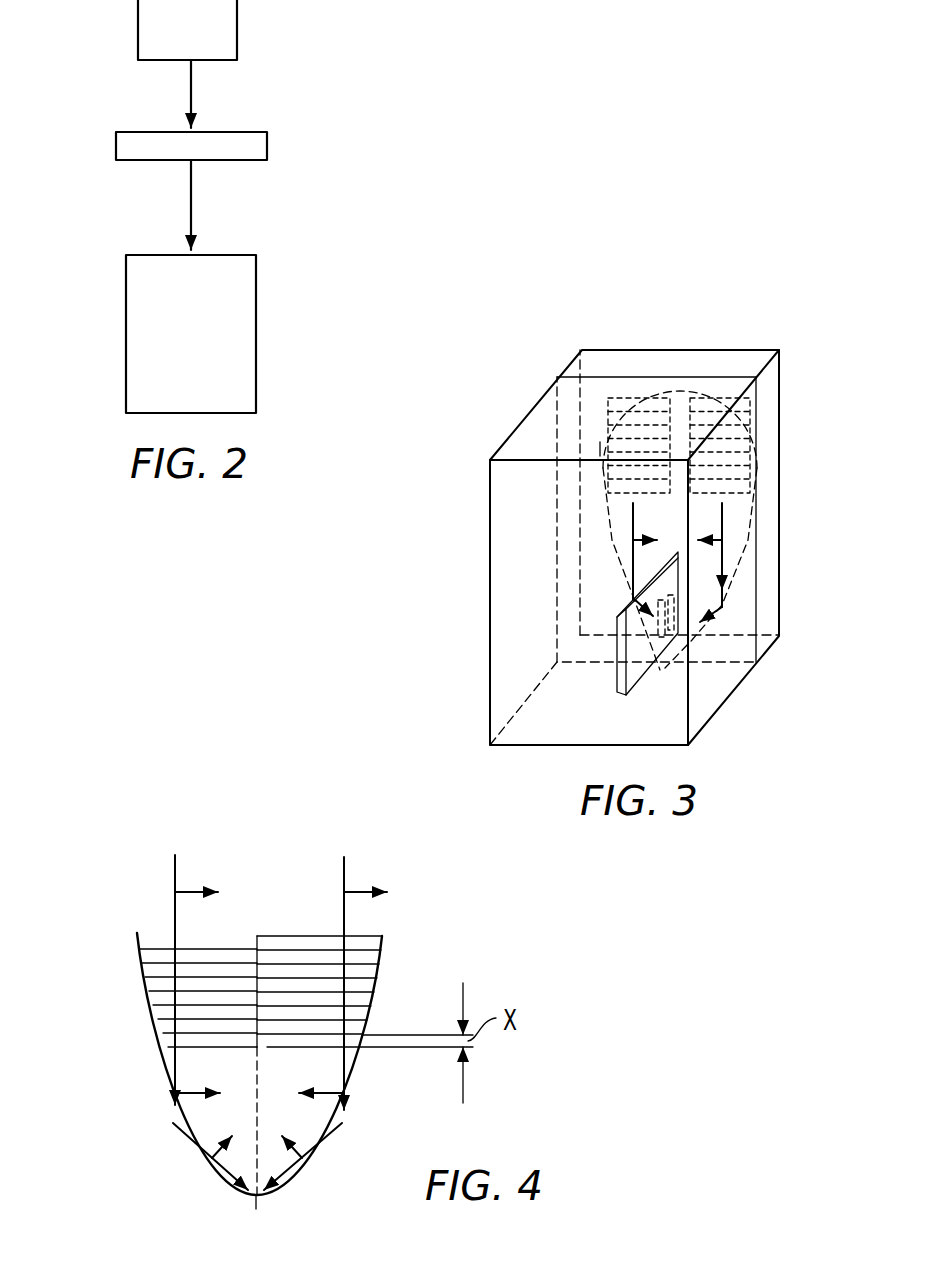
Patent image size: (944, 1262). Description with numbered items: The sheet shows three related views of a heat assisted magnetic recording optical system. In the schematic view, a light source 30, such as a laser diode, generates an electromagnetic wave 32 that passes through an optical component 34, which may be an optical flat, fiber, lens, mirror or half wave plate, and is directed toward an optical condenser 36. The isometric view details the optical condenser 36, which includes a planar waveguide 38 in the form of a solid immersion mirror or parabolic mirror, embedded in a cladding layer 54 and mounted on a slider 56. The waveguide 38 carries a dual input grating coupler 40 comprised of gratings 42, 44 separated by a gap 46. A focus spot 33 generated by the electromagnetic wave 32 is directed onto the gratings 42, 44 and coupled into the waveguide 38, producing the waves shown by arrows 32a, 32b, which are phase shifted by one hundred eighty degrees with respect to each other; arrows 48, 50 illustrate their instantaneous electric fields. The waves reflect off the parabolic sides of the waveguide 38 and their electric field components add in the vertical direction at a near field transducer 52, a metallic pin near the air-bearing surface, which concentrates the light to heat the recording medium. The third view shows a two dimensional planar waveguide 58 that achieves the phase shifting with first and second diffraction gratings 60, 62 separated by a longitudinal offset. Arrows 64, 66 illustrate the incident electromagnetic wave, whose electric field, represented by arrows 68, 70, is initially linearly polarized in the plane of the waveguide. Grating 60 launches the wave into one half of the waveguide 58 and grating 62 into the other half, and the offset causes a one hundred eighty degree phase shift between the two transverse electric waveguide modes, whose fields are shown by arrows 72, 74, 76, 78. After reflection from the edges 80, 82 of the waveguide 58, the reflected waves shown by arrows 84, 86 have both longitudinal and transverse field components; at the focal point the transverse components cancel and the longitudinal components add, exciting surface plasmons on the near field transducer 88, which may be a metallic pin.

In FIG. 2, the light source 30 is at (238, 30).
In FIG. 2, the electromagnetic wave 32 is at (192, 95).
In FIG. 2, the optical component 34 is at (267, 148).
In FIG. 2, the optical condenser 36 is at (257, 338).
In FIG. 3, the optical condenser 36 is at (812, 471).
In FIG. 3, the dual input grating coupler 40 is at (740, 370).
In FIG. 3, the grating 42 is at (638, 395).
In FIG. 3, the grating 44 is at (706, 400).
In FIG. 3, the gap 46 is at (677, 405).
In FIG. 3, the arrow illustrating instantaneous electric field 48 is at (632, 560).
In FIG. 3, the arrow illustrating instantaneous electric field 50 is at (715, 530).
In FIG. 3, the near field transducer 52 is at (724, 608).
In FIG. 3, the cladding layer 54 is at (593, 358).
In FIG. 3, the slider 56 is at (490, 660).
In FIG. 3, the focus spot 33 is at (600, 450).
In FIG. 3, the planar waveguide 38 is at (740, 570).
In FIG. 3, the electromagnetic wave within the waveguide 32a is at (630, 523).
In FIG. 3, the electromagnetic wave within the waveguide 32b is at (724, 512).
In FIG. 4, the two dimensional planar waveguide 58 is at (153, 935).
In FIG. 4, the first diffraction grating 60 is at (150, 1000).
In FIG. 4, the second diffraction grating 62 is at (375, 976).
In FIG. 4, the arrow illustrating incident electromagnetic wave 64 is at (173, 874).
In FIG. 4, the arrow illustrating incident electromagnetic wave 66 is at (342, 870).
In FIG. 4, the arrow illustrating electric field of incident wave 68 is at (195, 890).
In FIG. 4, the arrow illustrating electric field of incident wave 70 is at (362, 890).
In FIG. 4, the arrow illustrating electric field of transverse electric waveguide mode 72 is at (187, 1092).
In FIG. 4, the arrow illustrating electric field of transverse electric waveguide mode 74 is at (322, 1092).
In FIG. 4, the arrow illustrating electric field of transverse electric waveguide mode 76 is at (214, 1150).
In FIG. 4, the arrow illustrating electric field of transverse electric waveguide mode 78 is at (318, 1120).
In FIG. 4, the edge of waveguide 80 is at (162, 1102).
In FIG. 4, the edge of waveguide 82 is at (337, 1106).
In FIG. 4, the arrow illustrating reflected wave 84 is at (212, 1172).
In FIG. 4, the arrow illustrating reflected wave 86 is at (292, 1170).
In FIG. 4, the near field transducer 88 is at (257, 1205).